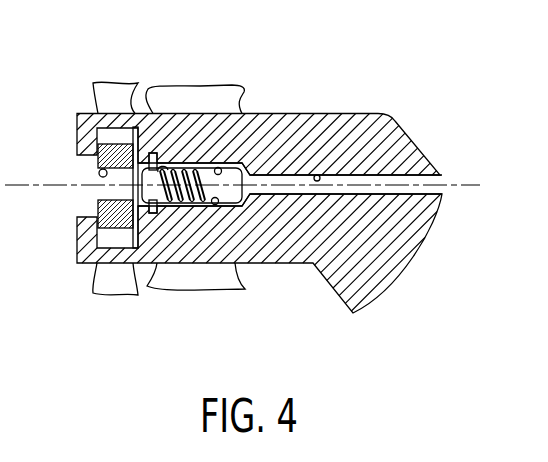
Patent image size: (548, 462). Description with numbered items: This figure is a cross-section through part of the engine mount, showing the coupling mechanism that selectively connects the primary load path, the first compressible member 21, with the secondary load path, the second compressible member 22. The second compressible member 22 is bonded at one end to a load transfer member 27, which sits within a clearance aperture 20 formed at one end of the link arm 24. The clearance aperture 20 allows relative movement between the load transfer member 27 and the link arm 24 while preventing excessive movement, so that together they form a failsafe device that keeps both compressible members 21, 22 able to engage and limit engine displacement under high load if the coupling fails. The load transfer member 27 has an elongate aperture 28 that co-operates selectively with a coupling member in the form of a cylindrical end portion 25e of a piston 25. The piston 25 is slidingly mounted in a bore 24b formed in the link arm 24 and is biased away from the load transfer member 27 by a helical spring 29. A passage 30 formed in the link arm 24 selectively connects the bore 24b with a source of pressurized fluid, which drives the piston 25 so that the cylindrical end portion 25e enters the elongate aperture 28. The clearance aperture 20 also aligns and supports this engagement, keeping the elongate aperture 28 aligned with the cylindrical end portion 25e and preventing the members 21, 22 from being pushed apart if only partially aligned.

The clearance aperture 20 is at (97, 127).
The first compressible member 21 is at (195, 280).
The second compressible member 22 is at (115, 288).
The link arm 24 is at (407, 147).
The bore 24b is at (202, 163).
The piston 25 is at (240, 163).
The cylindrical end portion 25e is at (150, 163).
The load transfer member 27 is at (98, 213).
The elongate aperture 28 is at (99, 171).
The helical spring 29 is at (173, 163).
The passage 30 is at (319, 175).